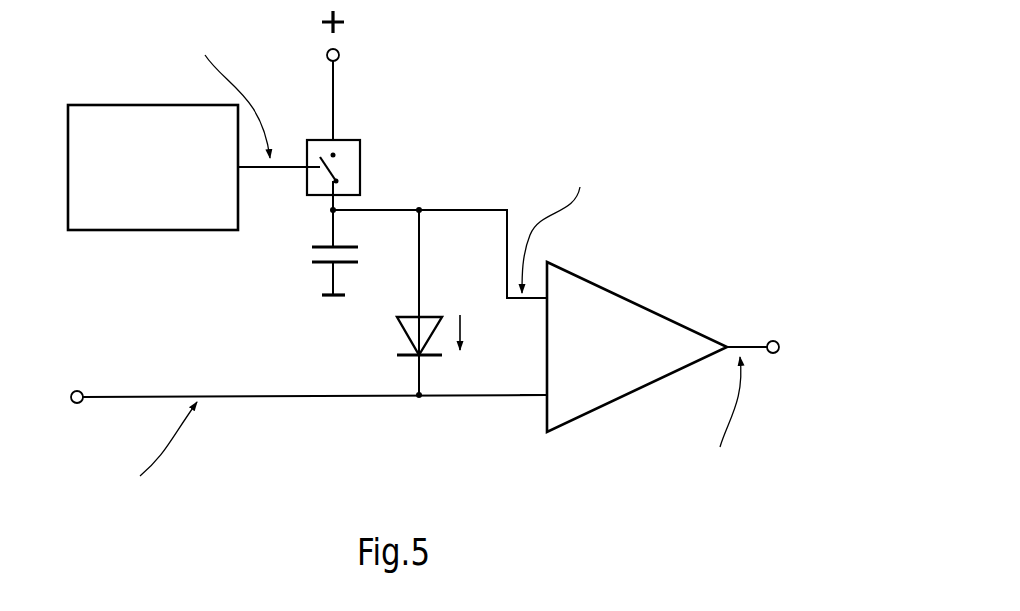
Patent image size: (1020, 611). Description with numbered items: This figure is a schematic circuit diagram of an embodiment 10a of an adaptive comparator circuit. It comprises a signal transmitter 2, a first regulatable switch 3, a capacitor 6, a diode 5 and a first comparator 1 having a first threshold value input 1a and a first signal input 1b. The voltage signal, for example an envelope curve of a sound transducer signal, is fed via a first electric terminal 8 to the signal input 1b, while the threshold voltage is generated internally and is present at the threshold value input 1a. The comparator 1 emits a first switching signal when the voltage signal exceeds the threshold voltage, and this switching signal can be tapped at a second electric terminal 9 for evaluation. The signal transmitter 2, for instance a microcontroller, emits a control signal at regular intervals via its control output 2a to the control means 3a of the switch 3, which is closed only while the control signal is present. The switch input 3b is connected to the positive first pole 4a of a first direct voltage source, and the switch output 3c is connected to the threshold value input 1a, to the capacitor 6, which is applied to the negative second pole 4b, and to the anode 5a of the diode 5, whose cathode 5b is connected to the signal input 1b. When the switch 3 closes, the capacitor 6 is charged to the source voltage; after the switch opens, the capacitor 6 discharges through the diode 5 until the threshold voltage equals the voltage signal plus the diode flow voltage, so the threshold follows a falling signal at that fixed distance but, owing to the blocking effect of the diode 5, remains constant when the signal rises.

The first comparator 1 is at (665, 313).
The first threshold value input 1a is at (547, 298).
The first signal input 1b is at (547, 395).
The signal transmitter 2 is at (149, 114).
The control output 2a is at (240, 169).
The first regulatable switch 3 is at (362, 148).
The control means 3a is at (320, 155).
The switch input 3b is at (335, 154).
The switch output 3c is at (337, 181).
The positive first pole 4a is at (339, 55).
The negative second pole 4b is at (318, 296).
The diode 5 is at (410, 347).
The anode 5a is at (418, 316).
The cathode 5b is at (411, 358).
The capacitor 6 is at (312, 252).
The first electric terminal 8 is at (75, 390).
The second electric terminal 9 is at (777, 337).
The adaptive comparator circuit 10a is at (700, 123).